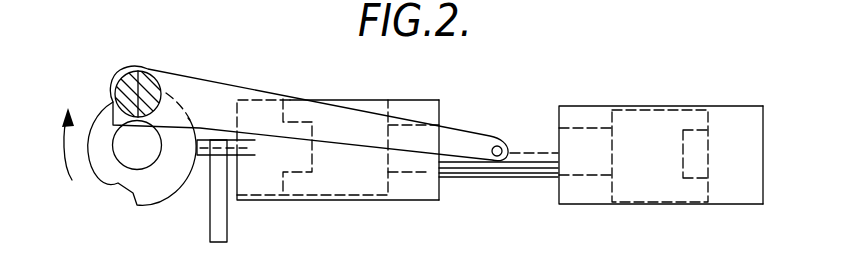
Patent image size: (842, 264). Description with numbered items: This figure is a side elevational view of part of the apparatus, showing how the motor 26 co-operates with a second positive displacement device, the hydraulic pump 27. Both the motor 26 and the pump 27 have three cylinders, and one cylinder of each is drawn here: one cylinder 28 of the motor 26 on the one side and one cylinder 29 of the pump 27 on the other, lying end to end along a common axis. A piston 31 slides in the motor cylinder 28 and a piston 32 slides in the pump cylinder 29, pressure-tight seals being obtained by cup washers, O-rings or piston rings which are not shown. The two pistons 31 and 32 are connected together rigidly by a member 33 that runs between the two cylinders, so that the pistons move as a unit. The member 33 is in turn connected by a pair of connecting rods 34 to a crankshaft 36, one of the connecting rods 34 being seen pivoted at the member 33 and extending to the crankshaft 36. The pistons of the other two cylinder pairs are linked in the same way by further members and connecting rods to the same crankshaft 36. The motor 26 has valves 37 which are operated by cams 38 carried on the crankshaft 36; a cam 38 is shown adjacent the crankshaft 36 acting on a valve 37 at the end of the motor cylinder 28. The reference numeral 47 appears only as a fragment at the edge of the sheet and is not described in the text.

The motor 26 is at (360, 92).
The hydraulic pump 27 is at (645, 92).
The cylinder 28 is at (440, 101).
The cylinder 29 is at (757, 72).
The piston 31 is at (353, 185).
The piston 32 is at (658, 193).
The member 33 is at (513, 167).
The connecting rod 34 is at (200, 87).
The crankshaft 36 is at (155, 160).
The valve 37 is at (248, 155).
The cam 38 is at (123, 180).
The reference numeral of adjacent figure 47 is at (34, 257).